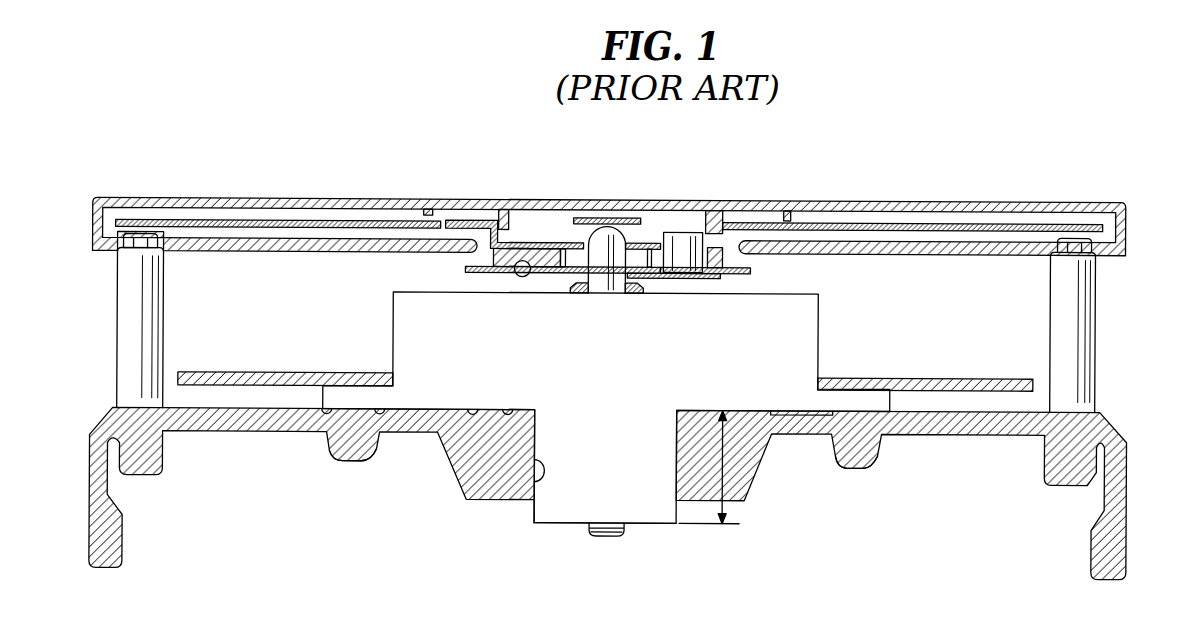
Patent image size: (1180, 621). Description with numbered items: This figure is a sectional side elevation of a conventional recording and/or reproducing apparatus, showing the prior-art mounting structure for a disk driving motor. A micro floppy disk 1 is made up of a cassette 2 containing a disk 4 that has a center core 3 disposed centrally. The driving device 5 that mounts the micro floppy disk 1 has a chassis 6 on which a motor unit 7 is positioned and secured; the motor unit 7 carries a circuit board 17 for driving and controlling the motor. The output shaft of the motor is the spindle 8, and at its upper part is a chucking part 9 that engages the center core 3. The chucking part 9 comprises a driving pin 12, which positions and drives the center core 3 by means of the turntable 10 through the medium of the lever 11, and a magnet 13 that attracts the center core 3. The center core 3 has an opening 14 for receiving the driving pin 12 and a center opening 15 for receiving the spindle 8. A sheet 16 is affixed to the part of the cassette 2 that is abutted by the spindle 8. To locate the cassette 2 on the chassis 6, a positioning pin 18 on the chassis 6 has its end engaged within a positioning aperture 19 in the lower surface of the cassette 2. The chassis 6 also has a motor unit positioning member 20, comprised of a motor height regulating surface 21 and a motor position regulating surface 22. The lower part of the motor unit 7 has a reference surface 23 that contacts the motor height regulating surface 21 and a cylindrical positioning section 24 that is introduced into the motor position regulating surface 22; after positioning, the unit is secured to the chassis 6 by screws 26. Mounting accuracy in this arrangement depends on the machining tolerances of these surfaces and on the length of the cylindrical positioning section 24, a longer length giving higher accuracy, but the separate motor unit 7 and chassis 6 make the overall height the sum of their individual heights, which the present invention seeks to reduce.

The micro floppy disk 1 is at (1009, 200).
The cassette 2 is at (164, 199).
The center core 3 is at (548, 243).
The disk 4 is at (323, 222).
The driving device 5 is at (591, 400).
The chassis 6 is at (258, 424).
The motor unit 7 is at (616, 381).
The spindle 8 is at (599, 284).
The chucking part 9 is at (677, 279).
The turntable 10 is at (752, 270).
The lever 11 is at (550, 274).
The driving pin 12 is at (694, 262).
The magnet 13 is at (491, 274).
The opening 14 is at (688, 232).
The center opening 15 is at (626, 219).
The sheet 16 is at (600, 225).
The circuit board 17 is at (222, 374).
The positioning pin 18 is at (158, 290).
The positioning aperture 19 is at (127, 253).
The motor unit positioning member 20 is at (470, 476).
The motor height regulating surface 21 is at (472, 406).
The motor position regulating surface 22 is at (521, 512).
The reference surface 23 is at (510, 406).
The cylindrical positioning section 24 is at (655, 516).
The screws 26 is at (352, 463).